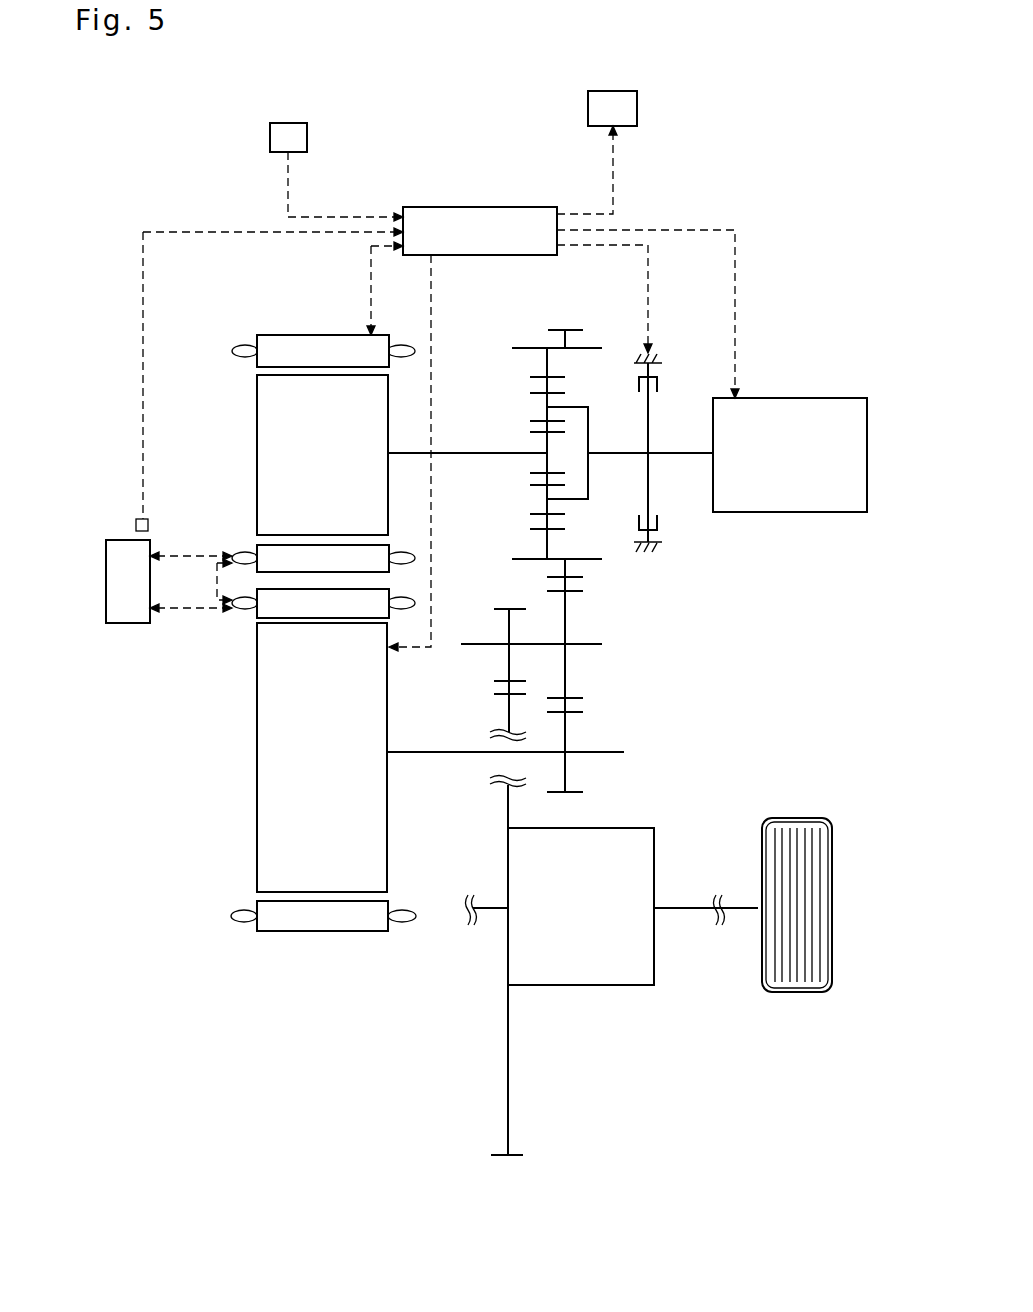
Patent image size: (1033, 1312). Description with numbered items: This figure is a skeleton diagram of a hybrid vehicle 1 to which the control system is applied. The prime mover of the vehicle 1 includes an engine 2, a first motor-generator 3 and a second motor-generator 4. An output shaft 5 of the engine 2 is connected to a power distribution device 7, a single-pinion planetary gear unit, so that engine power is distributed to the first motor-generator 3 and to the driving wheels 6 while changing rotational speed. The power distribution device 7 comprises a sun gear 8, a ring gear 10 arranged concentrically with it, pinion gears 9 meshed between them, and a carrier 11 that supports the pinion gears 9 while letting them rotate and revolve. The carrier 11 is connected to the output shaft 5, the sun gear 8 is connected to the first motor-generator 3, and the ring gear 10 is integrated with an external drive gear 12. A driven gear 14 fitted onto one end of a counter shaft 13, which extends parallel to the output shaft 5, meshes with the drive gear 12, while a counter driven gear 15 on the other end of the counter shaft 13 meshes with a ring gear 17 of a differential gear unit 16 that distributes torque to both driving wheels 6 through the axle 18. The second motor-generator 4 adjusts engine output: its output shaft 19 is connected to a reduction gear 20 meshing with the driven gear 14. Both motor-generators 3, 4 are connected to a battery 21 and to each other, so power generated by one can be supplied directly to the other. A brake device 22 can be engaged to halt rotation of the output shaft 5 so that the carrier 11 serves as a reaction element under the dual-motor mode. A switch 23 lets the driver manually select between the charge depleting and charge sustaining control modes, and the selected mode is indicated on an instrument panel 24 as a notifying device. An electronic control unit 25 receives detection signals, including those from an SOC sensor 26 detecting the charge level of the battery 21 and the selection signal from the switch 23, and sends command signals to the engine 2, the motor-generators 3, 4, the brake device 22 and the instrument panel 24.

The vehicle 1 is at (747, 195).
The engine 2 is at (787, 398).
The first motor-generator 3 is at (312, 330).
The second motor-generator 4 is at (243, 782).
The output shaft 5 is at (690, 453).
The driving wheels 6 is at (797, 818).
The power distribution device 7 is at (508, 330).
The sun gear 8 is at (530, 428).
The pinion gears 9 is at (558, 389).
The ring gear 10 is at (530, 380).
The carrier 11 is at (588, 430).
The drive gear 12 is at (559, 330).
The counter shaft 13 is at (592, 644).
The driven gear 14 is at (585, 590).
The counter driven gear 15 is at (500, 609).
The differential gear unit 16 is at (624, 828).
The ring gear 17 is at (498, 1157).
The axle 18 is at (688, 908).
The output shaft 19 is at (447, 750).
The reduction gear 20 is at (585, 712).
The battery 21 is at (128, 623).
The brake device 22 is at (668, 368).
The switch 23 is at (308, 135).
The instrument panel 24 is at (638, 108).
The electronic control unit 25 is at (484, 207).
The SOC sensor 26 is at (148, 525).